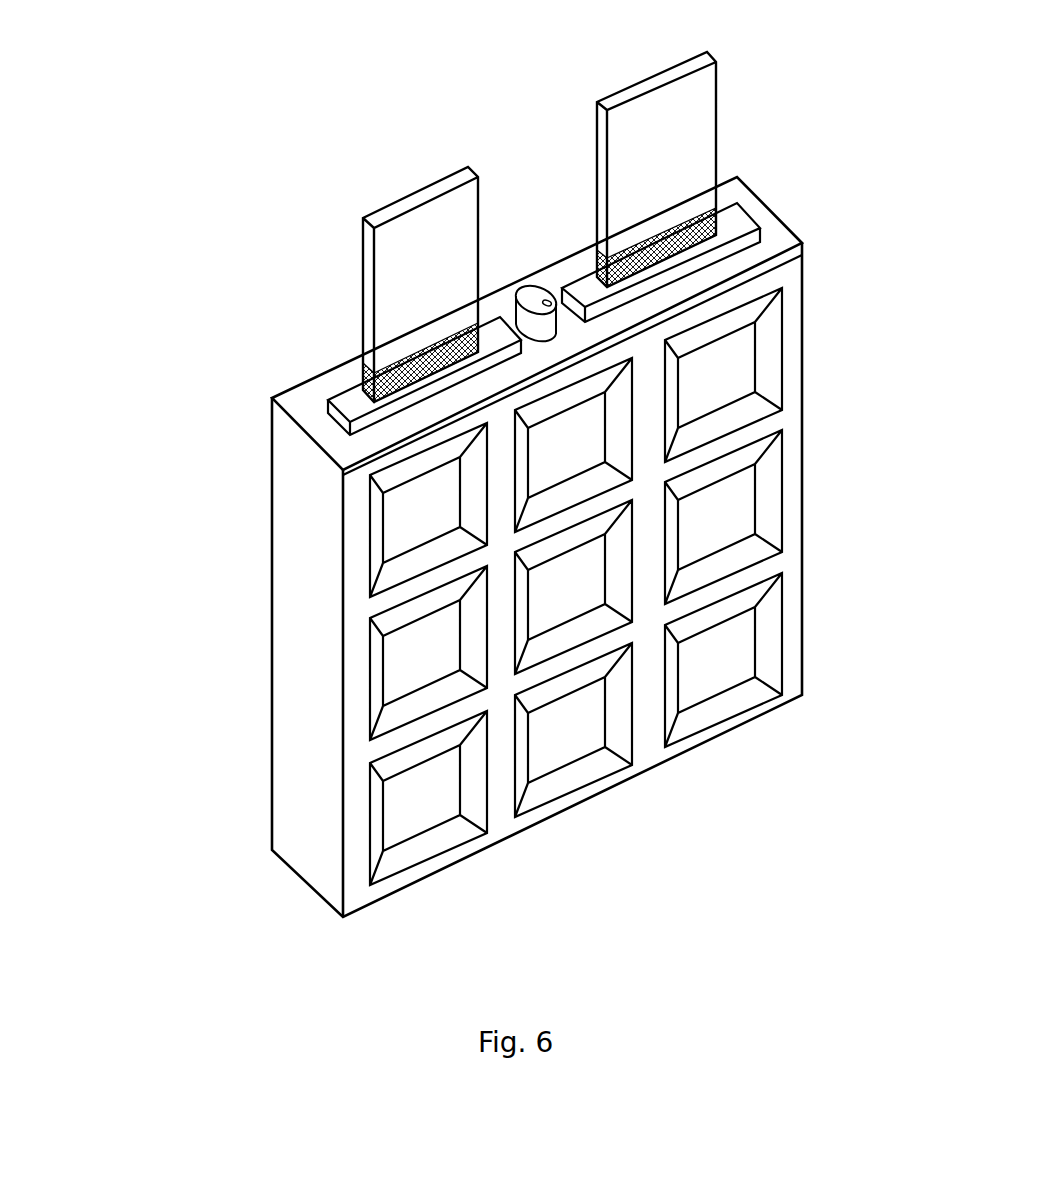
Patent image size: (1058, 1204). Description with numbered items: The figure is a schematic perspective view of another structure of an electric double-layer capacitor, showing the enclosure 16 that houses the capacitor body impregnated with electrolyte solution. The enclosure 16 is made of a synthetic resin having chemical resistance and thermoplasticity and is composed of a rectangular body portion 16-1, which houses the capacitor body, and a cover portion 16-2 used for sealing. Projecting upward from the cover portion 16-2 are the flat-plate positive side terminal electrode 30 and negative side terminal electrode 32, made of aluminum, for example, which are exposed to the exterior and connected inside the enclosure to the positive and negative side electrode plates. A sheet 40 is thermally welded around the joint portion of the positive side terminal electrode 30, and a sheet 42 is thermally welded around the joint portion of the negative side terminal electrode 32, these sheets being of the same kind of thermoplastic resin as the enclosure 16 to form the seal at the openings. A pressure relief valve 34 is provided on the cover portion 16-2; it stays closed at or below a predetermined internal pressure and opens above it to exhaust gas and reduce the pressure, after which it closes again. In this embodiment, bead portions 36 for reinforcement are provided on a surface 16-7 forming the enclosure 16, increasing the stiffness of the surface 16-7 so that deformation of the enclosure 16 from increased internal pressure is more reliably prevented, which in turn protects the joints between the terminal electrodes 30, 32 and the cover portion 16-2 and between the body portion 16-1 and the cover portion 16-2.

The enclosure 16 is at (246, 600).
The body portion 16-1 is at (600, 800).
The cover portion 16-2 is at (300, 403).
The surface 16-7 is at (378, 750).
The positive side terminal electrode 30 is at (407, 257).
The negative side terminal electrode 32 is at (667, 128).
The pressure relief valve 34 is at (537, 288).
The bead portions 36 is at (738, 497).
The sheet 40 is at (403, 360).
The sheet 42 is at (693, 232).